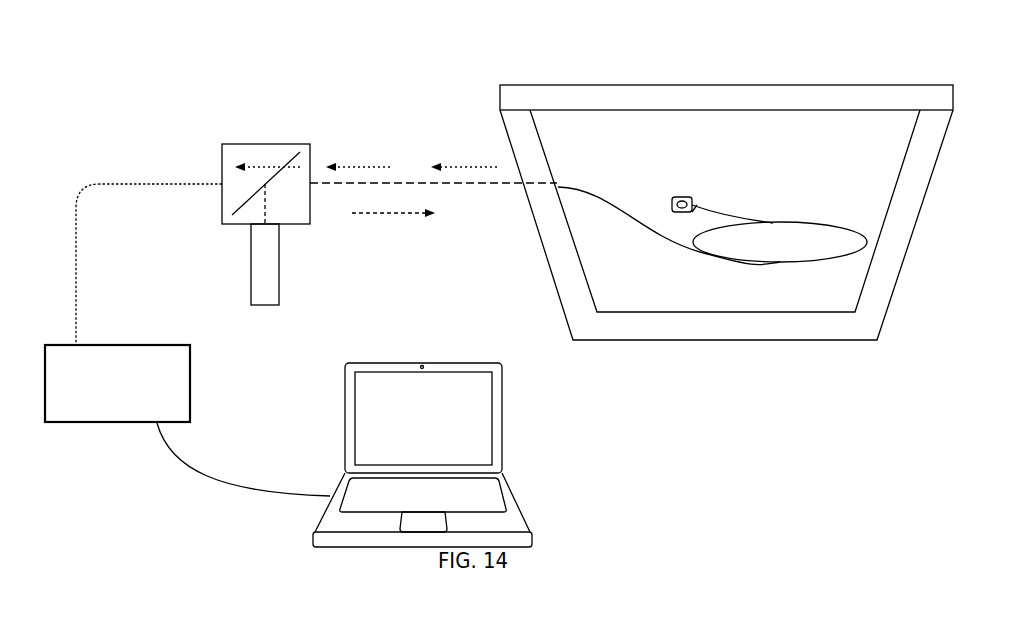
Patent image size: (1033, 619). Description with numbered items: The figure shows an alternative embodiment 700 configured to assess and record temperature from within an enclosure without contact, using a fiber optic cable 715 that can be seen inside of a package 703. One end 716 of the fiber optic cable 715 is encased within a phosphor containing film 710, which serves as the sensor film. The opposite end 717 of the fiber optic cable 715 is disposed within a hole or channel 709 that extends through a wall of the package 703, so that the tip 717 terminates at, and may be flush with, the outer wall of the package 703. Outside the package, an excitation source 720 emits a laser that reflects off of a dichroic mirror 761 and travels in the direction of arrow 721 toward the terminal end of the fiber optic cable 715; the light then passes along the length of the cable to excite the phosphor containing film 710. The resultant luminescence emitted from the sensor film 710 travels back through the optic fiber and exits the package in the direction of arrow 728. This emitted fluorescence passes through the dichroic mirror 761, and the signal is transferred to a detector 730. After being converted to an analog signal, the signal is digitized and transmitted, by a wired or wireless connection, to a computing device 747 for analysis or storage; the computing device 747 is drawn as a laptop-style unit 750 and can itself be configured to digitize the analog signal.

The alternative embodiment 700 is at (196, 90).
The package 703 is at (828, 97).
The hole or channel 709 is at (561, 189).
The phosphor containing film 710 is at (672, 198).
The fiber optic cable 715 is at (773, 223).
The one end of the fiber optic cable 716 is at (697, 202).
The opposite end of the fiber optic cable 717 is at (523, 185).
The excitation source 720 is at (272, 257).
The arrow 721 is at (385, 216).
The arrow 728 is at (377, 164).
The detector 730 is at (143, 405).
The computing device 747 is at (468, 403).
The computer 750 is at (513, 503).
The dichroic mirror 761 is at (226, 192).